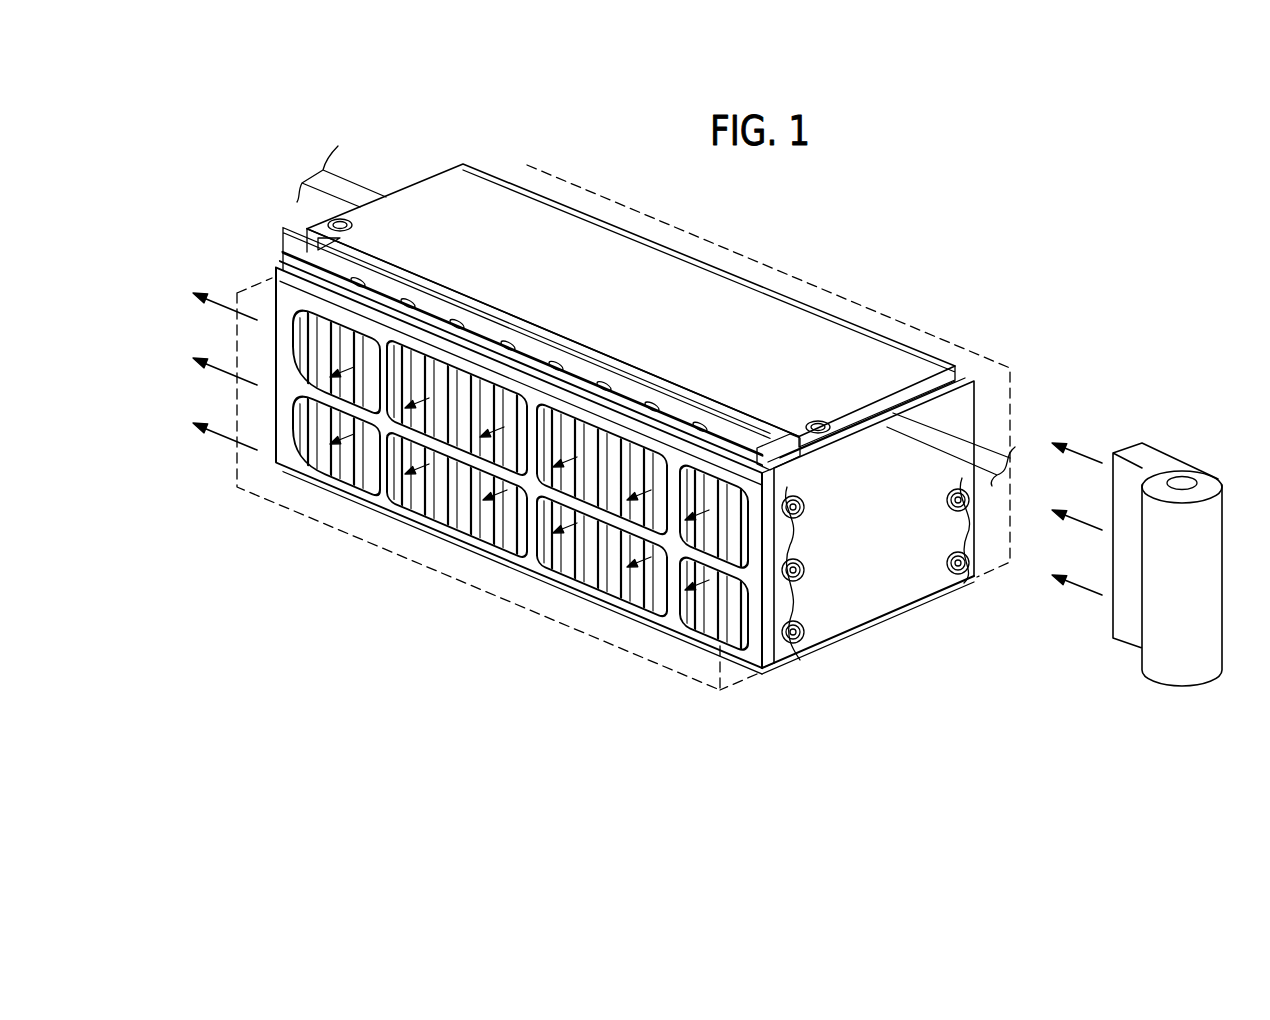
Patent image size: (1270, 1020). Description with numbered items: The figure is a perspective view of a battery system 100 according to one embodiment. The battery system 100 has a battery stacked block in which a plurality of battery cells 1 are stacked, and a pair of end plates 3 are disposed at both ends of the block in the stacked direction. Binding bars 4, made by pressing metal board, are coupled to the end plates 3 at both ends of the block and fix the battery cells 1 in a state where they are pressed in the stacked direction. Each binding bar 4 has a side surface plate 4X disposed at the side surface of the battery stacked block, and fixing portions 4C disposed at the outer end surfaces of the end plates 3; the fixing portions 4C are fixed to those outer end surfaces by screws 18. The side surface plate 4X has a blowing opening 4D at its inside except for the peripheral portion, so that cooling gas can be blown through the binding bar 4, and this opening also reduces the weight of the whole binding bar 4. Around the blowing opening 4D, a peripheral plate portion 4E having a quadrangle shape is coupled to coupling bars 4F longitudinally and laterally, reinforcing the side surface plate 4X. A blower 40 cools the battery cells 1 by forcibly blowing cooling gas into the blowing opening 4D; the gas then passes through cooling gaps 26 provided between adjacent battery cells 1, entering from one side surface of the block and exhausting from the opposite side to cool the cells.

The battery system 100 is at (822, 248).
The battery cell 1 is at (343, 362).
The end plate 3 is at (873, 570).
The binding bar 4 is at (578, 759).
The fixing portion 4C is at (778, 615).
The blowing opening 4D is at (463, 380).
The peripheral plate portion 4E is at (317, 465).
The coupling bar 4F is at (363, 493).
The side surface plate 4X is at (580, 696).
The screw 18 is at (807, 505).
The cooling gap 26 is at (410, 352).
The blower 40 is at (1194, 428).